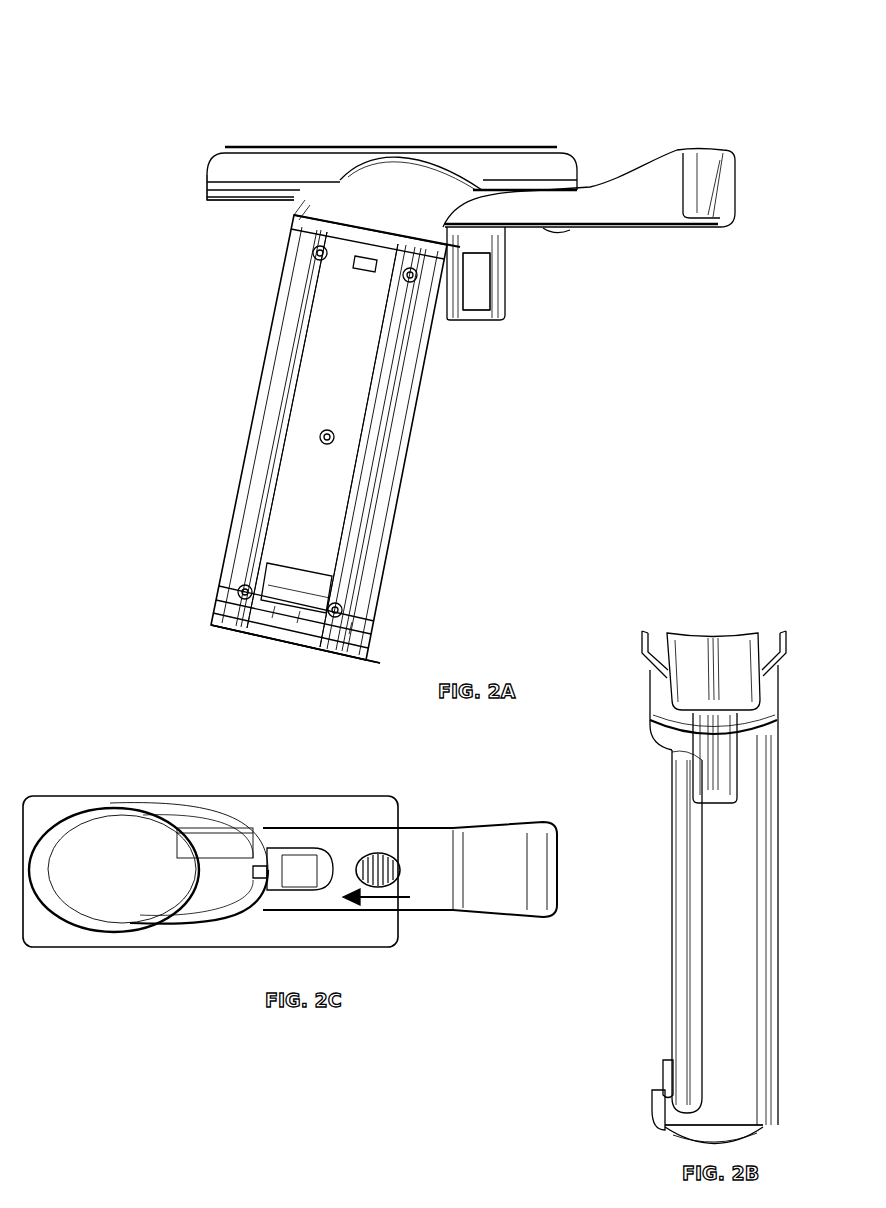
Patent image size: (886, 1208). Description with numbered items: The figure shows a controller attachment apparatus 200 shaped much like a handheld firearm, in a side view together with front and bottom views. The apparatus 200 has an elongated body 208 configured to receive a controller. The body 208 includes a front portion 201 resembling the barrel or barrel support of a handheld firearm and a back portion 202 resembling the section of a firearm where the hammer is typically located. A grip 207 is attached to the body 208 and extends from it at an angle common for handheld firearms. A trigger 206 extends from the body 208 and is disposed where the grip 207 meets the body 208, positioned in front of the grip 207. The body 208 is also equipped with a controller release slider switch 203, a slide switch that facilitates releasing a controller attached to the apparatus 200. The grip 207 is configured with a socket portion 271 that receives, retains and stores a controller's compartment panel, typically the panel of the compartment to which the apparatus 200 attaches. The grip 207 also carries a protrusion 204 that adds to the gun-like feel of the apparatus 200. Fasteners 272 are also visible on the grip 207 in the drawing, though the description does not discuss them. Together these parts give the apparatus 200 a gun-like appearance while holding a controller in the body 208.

In FIG. 2A, the controller attachment apparatus 200 is at (150, 133).
In FIG. 2B, the controller attachment apparatus 200 is at (717, 529).
In FIG. 2C, the controller attachment apparatus 200 is at (301, 729).
In FIG. 2A, the front portion 201 is at (742, 126).
In FIG. 2B, the front portion 201 is at (763, 604).
In FIG. 2C, the front portion 201 is at (557, 774).
In FIG. 2A, the back portion 202 is at (333, 132).
In FIG. 2C, the back portion 202 is at (153, 774).
In FIG. 2A, the controller release slider switch 203 is at (570, 230).
In FIG. 2C, the controller release slider switch 203 is at (383, 855).
In FIG. 2A, the protrusion 204 is at (375, 657).
In FIG. 2B, the protrusion 204 is at (737, 1128).
In FIG. 2A, the trigger 206 is at (507, 310).
In FIG. 2B, the trigger 206 is at (720, 777).
In FIG. 2C, the trigger 206 is at (327, 870).
In FIG. 2A, the grip 207 is at (189, 215).
In FIG. 2B, the grip 207 is at (619, 720).
In FIG. 2A, the body 208 is at (742, 52).
In FIG. 2B, the body 208 is at (802, 630).
In FIG. 2A, the socket portion 271 is at (370, 415).
In FIG. 2B, the socket portion 271 is at (682, 982).
In FIG. 2A, the fasteners 272 is at (368, 258).